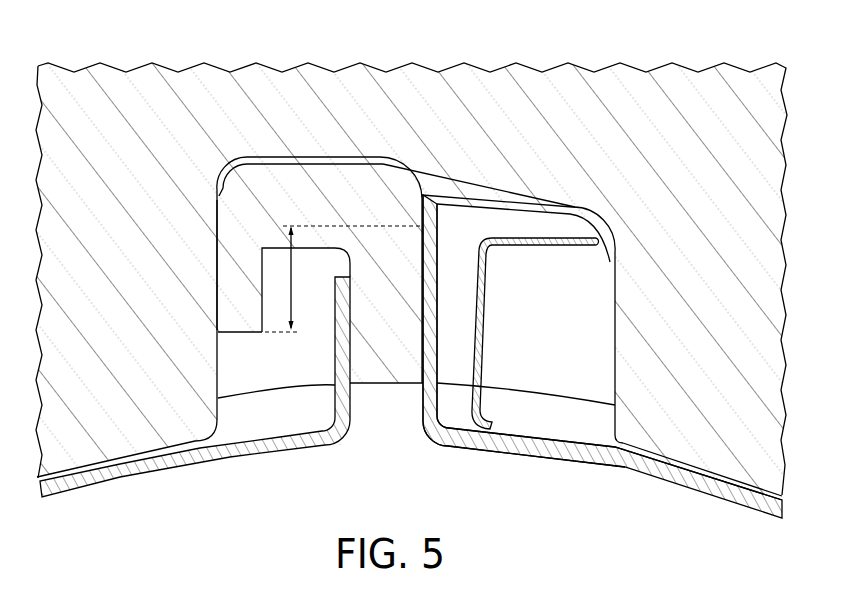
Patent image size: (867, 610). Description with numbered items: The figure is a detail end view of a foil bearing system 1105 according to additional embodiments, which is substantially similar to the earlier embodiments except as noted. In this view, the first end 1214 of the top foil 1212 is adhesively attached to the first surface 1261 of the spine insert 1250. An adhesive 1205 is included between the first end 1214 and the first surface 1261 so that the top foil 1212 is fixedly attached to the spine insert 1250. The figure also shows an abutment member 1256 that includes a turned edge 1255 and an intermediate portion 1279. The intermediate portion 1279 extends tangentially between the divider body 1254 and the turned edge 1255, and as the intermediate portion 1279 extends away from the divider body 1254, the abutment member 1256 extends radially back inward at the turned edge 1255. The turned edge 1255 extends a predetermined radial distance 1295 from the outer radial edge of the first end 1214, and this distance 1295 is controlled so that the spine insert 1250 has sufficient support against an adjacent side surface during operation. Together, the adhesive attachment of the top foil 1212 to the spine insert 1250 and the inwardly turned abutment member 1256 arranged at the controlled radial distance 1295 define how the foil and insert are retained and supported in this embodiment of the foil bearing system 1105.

The foil bearing system 1105 is at (132, 98).
The top foil 1212 is at (540, 450).
The spine insert 1250 is at (341, 205).
The intermediate portion 1279 is at (302, 178).
The abutment member 1256 is at (224, 235).
The turned edge 1255 is at (224, 302).
The predetermined radial distance 1295 is at (291, 304).
The first surface 1261 is at (426, 232).
The first end 1214 is at (428, 294).
The adhesive 1205 is at (426, 330).
The divider body 1254 is at (400, 381).